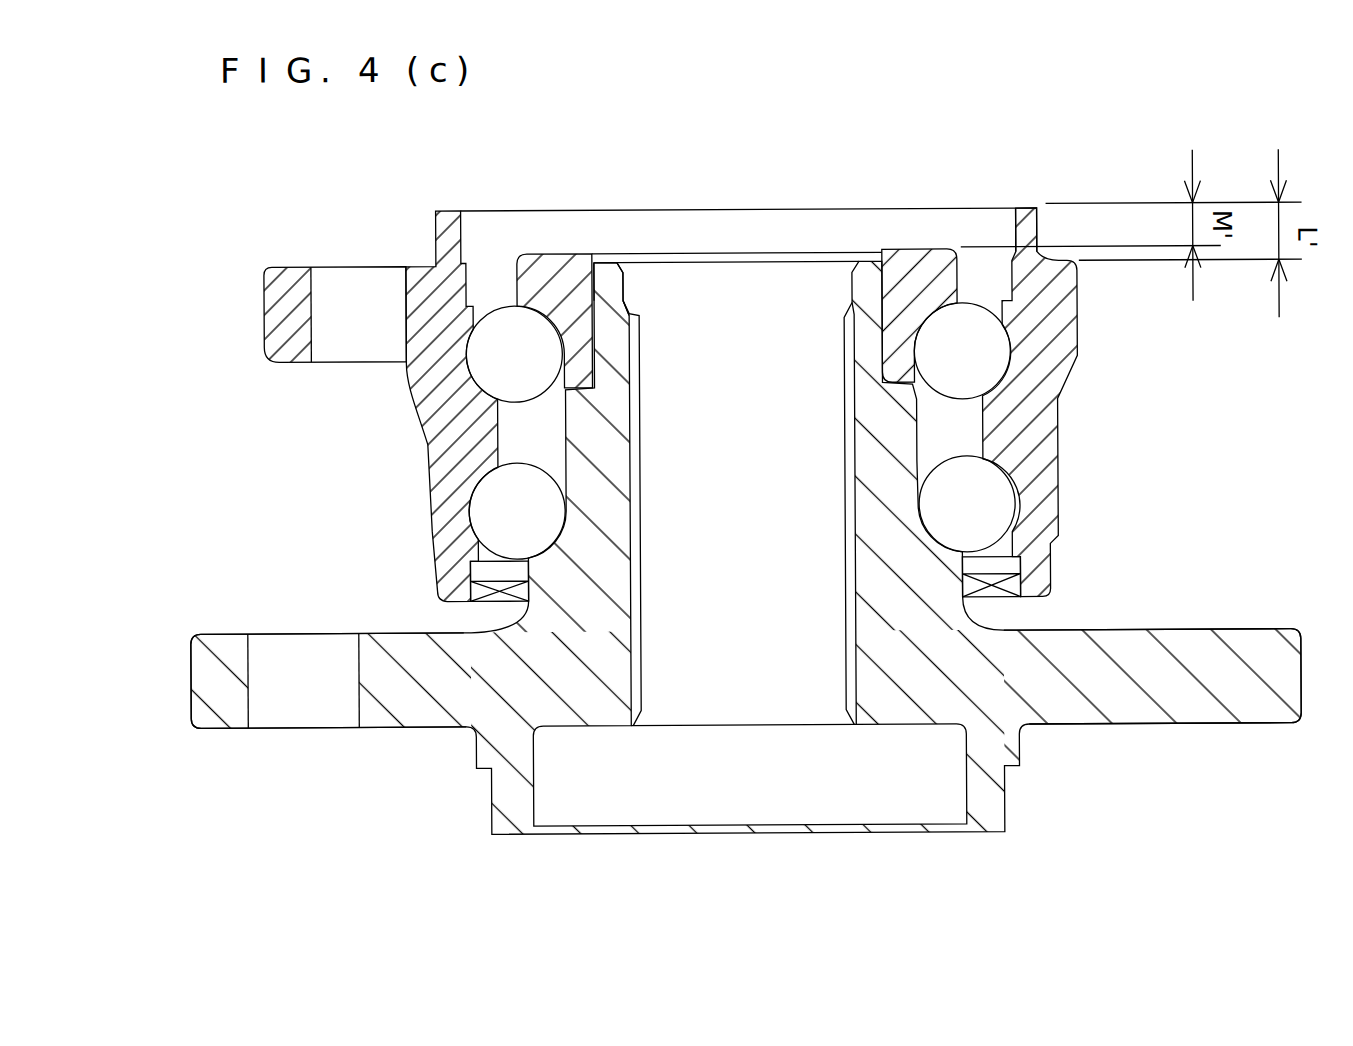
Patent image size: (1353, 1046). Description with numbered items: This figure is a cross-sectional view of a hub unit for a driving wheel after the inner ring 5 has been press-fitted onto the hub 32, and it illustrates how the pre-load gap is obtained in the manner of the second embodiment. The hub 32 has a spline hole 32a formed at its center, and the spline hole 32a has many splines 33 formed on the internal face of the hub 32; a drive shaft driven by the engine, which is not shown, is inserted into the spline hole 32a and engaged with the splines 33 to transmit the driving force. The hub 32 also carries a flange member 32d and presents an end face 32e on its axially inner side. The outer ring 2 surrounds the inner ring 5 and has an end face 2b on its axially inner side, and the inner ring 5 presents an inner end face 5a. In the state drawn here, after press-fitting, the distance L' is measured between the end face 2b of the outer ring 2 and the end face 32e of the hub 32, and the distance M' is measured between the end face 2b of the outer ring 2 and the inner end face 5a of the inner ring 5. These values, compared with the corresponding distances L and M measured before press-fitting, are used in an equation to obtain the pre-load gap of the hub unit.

The outer ring 2 is at (443, 430).
The end face of axially inner side of the outer ring 2b is at (1028, 209).
The inner ring 5 is at (550, 270).
The inner end face of the inner ring 5a is at (913, 262).
The hub 32 is at (585, 680).
The spline hole 32a is at (625, 300).
The flange member 32d is at (1185, 655).
The end face of axially inner side of the hub 32e is at (875, 262).
The splines 33 is at (848, 513).